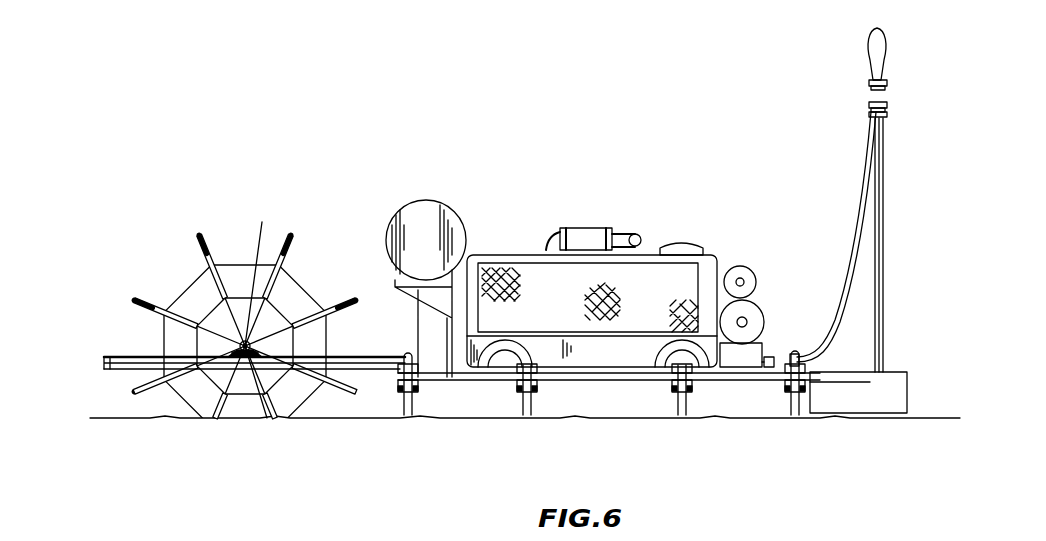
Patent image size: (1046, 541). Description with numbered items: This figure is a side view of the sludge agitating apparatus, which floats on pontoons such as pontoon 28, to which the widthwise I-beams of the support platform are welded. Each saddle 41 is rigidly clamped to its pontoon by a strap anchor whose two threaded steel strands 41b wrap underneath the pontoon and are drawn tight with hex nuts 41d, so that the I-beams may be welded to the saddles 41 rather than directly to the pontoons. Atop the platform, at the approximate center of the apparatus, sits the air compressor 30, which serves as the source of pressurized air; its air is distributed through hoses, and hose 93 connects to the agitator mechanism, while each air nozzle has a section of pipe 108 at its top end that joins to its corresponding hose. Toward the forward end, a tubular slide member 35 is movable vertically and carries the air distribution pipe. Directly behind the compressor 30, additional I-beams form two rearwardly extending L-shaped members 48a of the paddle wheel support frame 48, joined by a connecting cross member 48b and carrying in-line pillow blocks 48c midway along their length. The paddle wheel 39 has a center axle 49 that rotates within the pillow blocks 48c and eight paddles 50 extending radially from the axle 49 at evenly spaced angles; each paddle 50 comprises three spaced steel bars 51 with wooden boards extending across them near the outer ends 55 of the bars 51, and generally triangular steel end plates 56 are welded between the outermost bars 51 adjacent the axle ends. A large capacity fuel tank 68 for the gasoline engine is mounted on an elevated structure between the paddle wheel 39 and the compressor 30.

The pontoon 28 is at (884, 388).
The air compressor 30 is at (710, 257).
The tubular slide member 35 is at (884, 245).
The paddle wheel 39 is at (352, 211).
The saddle 41 is at (537, 384).
The strand 41b is at (523, 408).
The hex nut 41d is at (398, 393).
The paddle wheel support frame 48 is at (108, 384).
The L-shaped member 48a is at (166, 372).
The connecting cross member 48b is at (105, 357).
The pillow block 48c is at (190, 350).
The center axle 49 is at (245, 360).
The paddle 50 is at (157, 297).
The steel bar 51 is at (143, 396).
The outer end 55 is at (140, 298).
The end plate 56 is at (257, 300).
The fuel tank 68 is at (445, 205).
The hose 93 is at (850, 275).
The section of pipe 108 is at (400, 386).